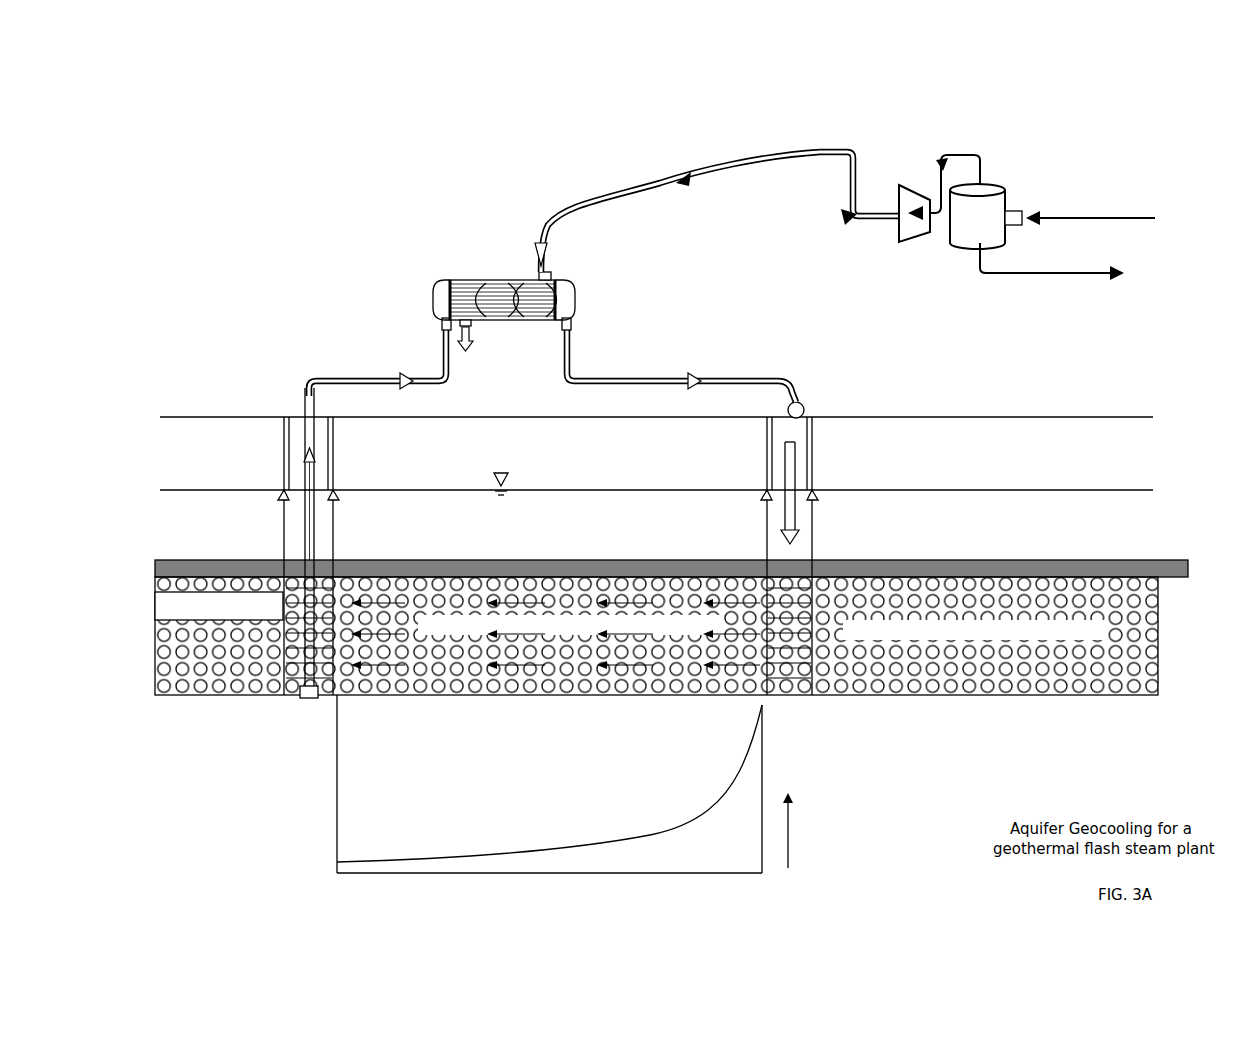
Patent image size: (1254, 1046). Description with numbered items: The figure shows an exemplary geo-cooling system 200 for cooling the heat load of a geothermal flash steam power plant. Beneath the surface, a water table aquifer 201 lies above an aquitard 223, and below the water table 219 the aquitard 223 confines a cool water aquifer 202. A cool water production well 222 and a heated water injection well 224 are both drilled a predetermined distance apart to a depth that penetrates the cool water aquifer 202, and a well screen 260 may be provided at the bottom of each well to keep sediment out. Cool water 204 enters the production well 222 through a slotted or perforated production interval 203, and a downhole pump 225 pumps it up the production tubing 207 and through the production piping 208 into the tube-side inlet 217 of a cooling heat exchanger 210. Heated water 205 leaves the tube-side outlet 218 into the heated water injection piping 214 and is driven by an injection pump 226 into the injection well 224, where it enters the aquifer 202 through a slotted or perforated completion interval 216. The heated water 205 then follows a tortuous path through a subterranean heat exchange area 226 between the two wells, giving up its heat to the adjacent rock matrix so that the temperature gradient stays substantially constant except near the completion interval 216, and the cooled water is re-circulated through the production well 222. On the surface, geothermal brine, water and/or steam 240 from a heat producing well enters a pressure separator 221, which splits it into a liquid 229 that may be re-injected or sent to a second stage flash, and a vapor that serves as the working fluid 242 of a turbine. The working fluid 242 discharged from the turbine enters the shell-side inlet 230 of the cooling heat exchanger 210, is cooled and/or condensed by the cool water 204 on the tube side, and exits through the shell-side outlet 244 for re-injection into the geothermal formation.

The geo-cooling system 200 is at (228, 288).
The water table aquifer 201 is at (602, 549).
The cool water aquifer 202 is at (170, 607).
The production interval 203 is at (202, 690).
The cool water 204 is at (313, 512).
The heated water 205 is at (797, 478).
The production tubing 207 is at (322, 452).
The production piping 208 is at (290, 389).
The cooling heat exchanger 210 is at (620, 280).
The heated water injection piping 214 is at (800, 378).
The completion interval 216 is at (832, 640).
The tube-side inlet 217 is at (440, 331).
The tube-side outlet 218 is at (573, 329).
The water table 219 is at (656, 481).
The pressure separator 221 is at (997, 182).
The cool water production well 222 is at (279, 534).
The aquitard 223 is at (504, 551).
The heated water injection well 224 is at (822, 541).
The downhole pump 225 is at (290, 686).
The injection pump 226 is at (883, 398).
The liquid 229 is at (1020, 274).
The shell-side inlet 230 is at (652, 182).
The geothermal brine, water and/or steam 240 is at (1062, 210).
The working fluid 242 is at (853, 207).
The shell-side outlet 244 is at (543, 403).
The well screen 260 is at (322, 690).